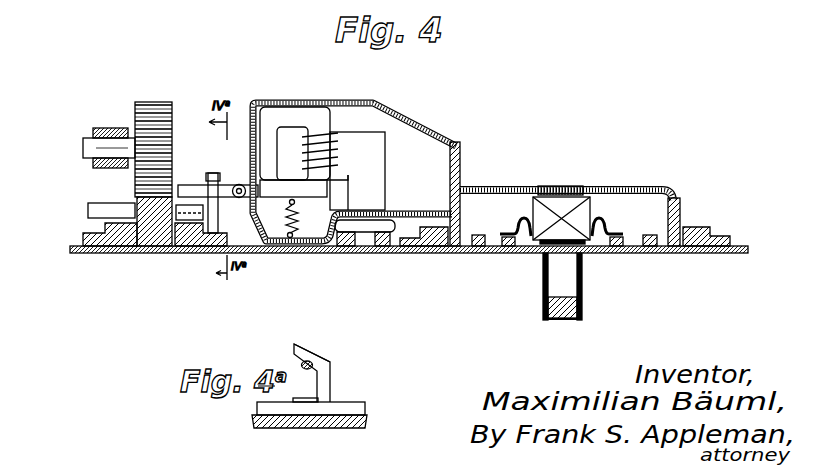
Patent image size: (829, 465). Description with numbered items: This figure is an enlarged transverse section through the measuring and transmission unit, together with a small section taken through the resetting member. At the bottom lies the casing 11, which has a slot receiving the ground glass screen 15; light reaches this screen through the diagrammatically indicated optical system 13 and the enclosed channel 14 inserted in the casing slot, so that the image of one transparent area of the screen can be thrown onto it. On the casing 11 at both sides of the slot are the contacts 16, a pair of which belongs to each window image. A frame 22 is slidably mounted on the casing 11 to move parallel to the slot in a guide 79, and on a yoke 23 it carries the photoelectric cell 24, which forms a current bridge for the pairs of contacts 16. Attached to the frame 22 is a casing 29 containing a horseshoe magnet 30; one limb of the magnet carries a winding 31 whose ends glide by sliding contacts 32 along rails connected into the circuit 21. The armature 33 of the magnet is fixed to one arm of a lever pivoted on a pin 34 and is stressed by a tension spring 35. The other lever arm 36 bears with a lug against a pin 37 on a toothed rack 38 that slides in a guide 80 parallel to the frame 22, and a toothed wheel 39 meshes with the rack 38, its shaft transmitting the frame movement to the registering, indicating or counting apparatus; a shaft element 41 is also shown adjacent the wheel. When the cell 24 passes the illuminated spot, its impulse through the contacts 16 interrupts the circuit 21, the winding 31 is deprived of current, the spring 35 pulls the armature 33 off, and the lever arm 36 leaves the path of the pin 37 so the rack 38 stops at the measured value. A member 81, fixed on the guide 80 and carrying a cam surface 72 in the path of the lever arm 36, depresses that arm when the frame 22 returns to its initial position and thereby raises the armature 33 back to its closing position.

In FIG. 4, the casing 11 is at (738, 253).
In FIG. 4A, the casing 11 is at (366, 421).
In FIG. 4, the optical system 13 is at (557, 319).
In FIG. 4, the enclosed channel 14 is at (582, 307).
In FIG. 4, the ground glass screen 15 is at (563, 253).
In FIG. 4, the contacts 16 is at (508, 253).
In FIG. 4, the circuit 21 is at (377, 252).
In FIG. 4, the frame 22 is at (680, 200).
In FIG. 4, the yoke 23 is at (618, 189).
In FIG. 4, the photoelectric cell 24 is at (540, 202).
In FIG. 4, the casing 29 is at (410, 122).
In FIG. 4, the horseshoe magnet 30 is at (290, 112).
In FIG. 4, the winding 31 is at (338, 152).
In FIG. 4, the sliding contacts 32 is at (392, 222).
In FIG. 4, the armature 33 is at (327, 192).
In FIG. 4, the pin 34 is at (238, 197).
In FIG. 4, the tension spring 35 is at (287, 237).
In FIG. 4, the lever arm 36 is at (197, 188).
In FIG. 4A, the lever arm 36 is at (302, 367).
In FIG. 4, the pin 37 is at (190, 221).
In FIG. 4, the toothed rack 38 is at (142, 253).
In FIG. 4, the toothed wheel 39 is at (158, 110).
In FIG. 4, the shaft 41 is at (120, 210).
In FIG. 4A, the cam surface 72 is at (294, 350).
In FIG. 4, the guide 79 is at (415, 252).
In FIG. 4, the guide 80 is at (87, 257).
In FIG. 4A, the guide 80 is at (350, 403).
In FIG. 4, the member 81 is at (222, 170).
In FIG. 4A, the member 81 is at (331, 383).